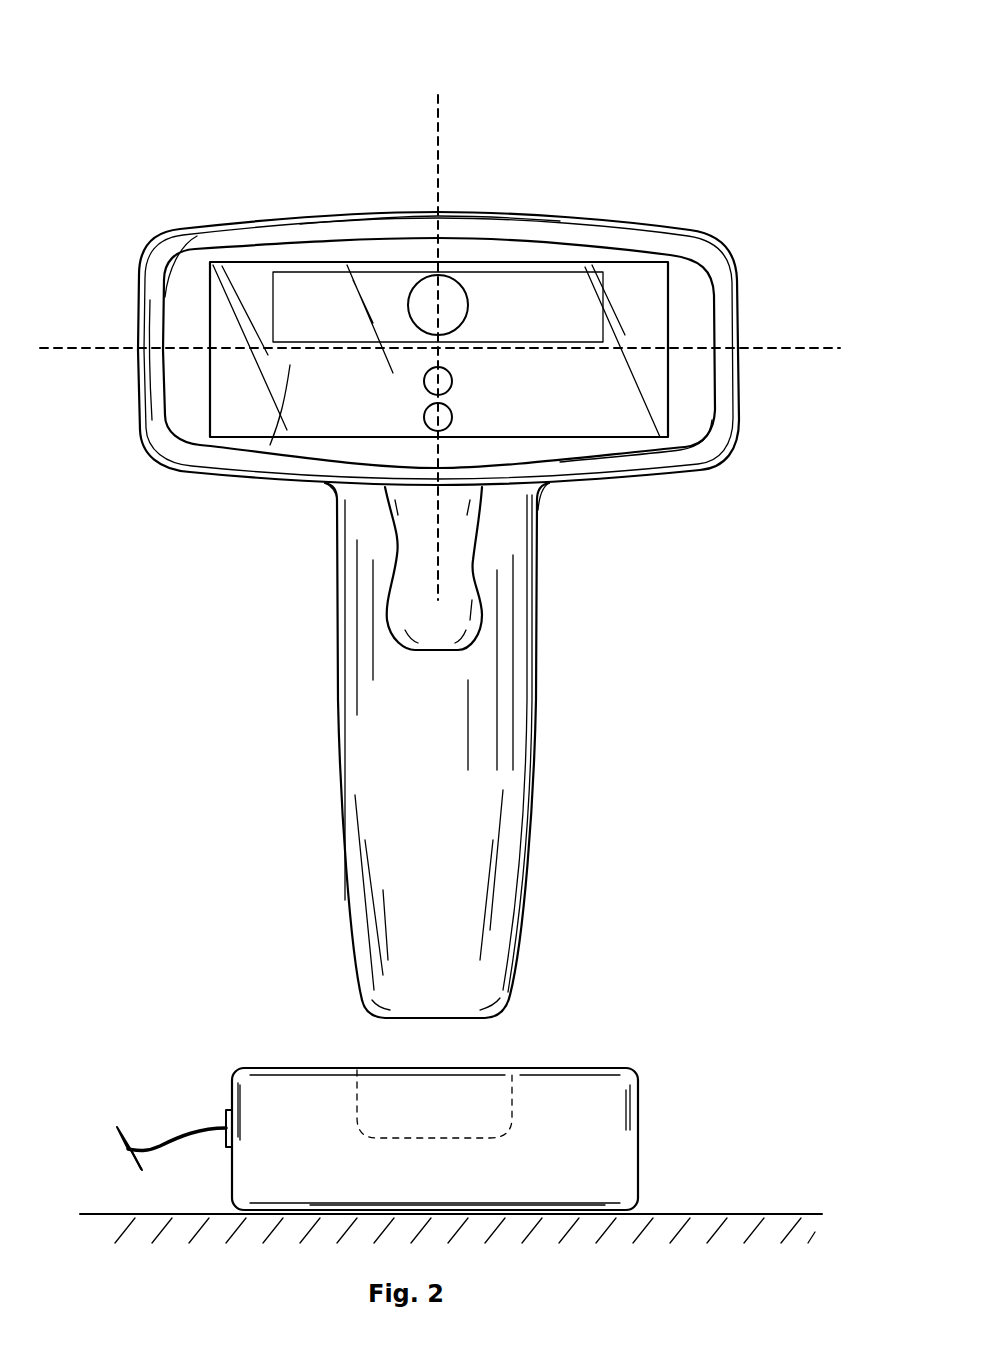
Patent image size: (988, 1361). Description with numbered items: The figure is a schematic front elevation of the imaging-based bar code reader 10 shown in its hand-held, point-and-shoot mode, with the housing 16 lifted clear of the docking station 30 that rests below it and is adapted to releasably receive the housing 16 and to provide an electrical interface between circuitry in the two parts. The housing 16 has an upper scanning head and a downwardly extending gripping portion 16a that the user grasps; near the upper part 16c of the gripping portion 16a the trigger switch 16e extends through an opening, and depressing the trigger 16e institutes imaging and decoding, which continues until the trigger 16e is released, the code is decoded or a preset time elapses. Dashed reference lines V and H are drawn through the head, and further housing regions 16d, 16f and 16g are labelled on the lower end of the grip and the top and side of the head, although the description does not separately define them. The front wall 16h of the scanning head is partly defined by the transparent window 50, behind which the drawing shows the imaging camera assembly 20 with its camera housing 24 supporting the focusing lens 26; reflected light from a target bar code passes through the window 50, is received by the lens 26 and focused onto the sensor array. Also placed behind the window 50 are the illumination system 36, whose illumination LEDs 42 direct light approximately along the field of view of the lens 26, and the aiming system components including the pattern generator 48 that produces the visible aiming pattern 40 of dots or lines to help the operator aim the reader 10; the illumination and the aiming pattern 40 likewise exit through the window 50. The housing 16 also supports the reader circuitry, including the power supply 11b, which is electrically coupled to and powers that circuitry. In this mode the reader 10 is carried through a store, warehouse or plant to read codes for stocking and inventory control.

The bar code reader 10 is at (150, 105).
The vertical axis V is at (438, 113).
The horizontal axis H is at (58, 350).
The housing 16 is at (308, 672).
The gripping portion 16a is at (545, 740).
The upper part of the gripping portion 16c is at (545, 485).
The handle bottom end 16d is at (510, 990).
The trigger switch 16e is at (427, 592).
The head top surface 16f is at (455, 210).
The head left side 16g is at (153, 360).
The front wall 16h is at (183, 400).
The power supply 11b is at (620, 478).
The imaging camera assembly 20 is at (562, 250).
The camera housing 24 is at (380, 270).
The focusing lens 26 is at (413, 300).
The illumination system 36 is at (455, 458).
The aiming pattern 40 is at (431, 398).
The illumination LEDs 42 is at (443, 417).
The pattern generator 48 is at (443, 380).
The transparent window 50 is at (295, 362).
The docking station 30 is at (640, 1128).